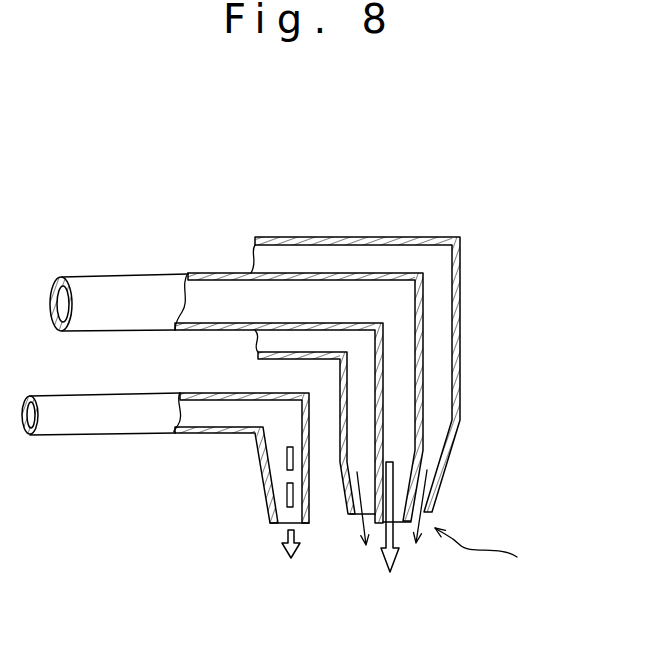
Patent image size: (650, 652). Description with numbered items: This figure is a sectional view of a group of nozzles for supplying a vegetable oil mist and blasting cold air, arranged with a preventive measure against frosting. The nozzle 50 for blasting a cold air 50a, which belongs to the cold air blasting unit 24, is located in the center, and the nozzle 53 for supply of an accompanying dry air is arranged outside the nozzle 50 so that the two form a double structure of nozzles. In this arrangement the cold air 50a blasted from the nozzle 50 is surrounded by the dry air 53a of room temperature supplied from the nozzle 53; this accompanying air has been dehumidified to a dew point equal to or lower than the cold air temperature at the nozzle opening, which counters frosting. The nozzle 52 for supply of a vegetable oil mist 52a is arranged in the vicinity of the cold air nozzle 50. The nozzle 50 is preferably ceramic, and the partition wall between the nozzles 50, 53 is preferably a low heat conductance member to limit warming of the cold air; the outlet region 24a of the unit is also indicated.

The cold air blasting unit 24 is at (487, 420).
The nozzle outlet 24a is at (511, 559).
The nozzle for blasting a cold air 50 is at (125, 275).
The cold air 50a is at (392, 567).
The nozzle for supply of a vegetable oil mist 52 is at (72, 437).
The vegetable oil mist 52a is at (288, 558).
The nozzle for supply of an accompanying dry air 53 is at (460, 287).
The dry air 53a is at (435, 492).